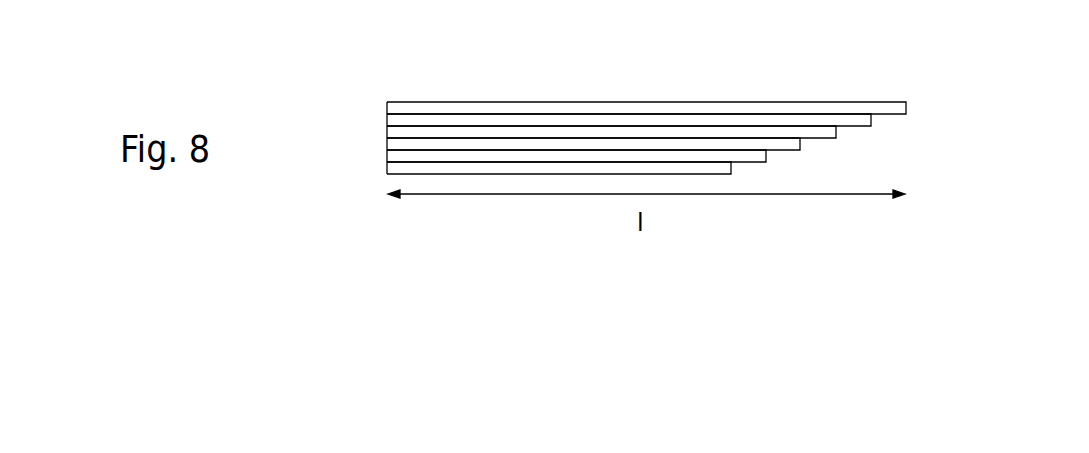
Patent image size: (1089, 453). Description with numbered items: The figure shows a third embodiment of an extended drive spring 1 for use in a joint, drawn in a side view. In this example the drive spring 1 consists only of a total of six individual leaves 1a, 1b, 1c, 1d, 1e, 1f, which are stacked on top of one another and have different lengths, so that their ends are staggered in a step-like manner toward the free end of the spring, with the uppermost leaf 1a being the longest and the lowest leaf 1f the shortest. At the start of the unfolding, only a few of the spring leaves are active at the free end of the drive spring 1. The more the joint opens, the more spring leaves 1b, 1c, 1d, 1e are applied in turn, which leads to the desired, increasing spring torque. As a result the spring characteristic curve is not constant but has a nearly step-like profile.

The drive spring 1 is at (712, 133).
The spring leaf 1a is at (908, 108).
The spring leaf 1b is at (872, 119).
The spring leaf 1c is at (837, 131).
The spring leaf 1d is at (801, 143).
The spring leaf 1e is at (767, 155).
The spring leaf 1f is at (732, 167).